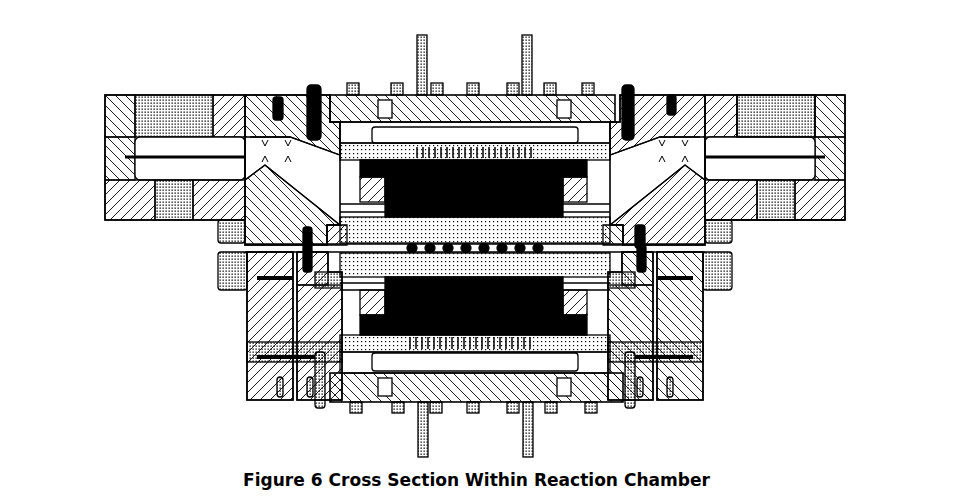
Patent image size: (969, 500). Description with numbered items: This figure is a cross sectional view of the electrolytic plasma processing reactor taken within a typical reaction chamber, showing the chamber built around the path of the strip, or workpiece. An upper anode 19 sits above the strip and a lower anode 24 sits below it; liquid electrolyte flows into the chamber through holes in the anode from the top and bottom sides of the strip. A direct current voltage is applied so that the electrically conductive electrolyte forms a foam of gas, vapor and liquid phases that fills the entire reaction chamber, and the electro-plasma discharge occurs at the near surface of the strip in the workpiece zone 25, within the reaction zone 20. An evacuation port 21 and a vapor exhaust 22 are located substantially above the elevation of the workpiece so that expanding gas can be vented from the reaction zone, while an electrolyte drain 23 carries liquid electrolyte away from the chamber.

The Upper Anode 19 is at (448, 178).
The Reaction Zone 20 is at (450, 225).
The Evacuation Port 21 is at (624, 170).
The Vapor Exhaust 22 is at (745, 83).
The Electrolyte Drain 23 is at (776, 238).
The Lower Anode 24 is at (496, 306).
The Workpiece Zone 25 is at (434, 268).